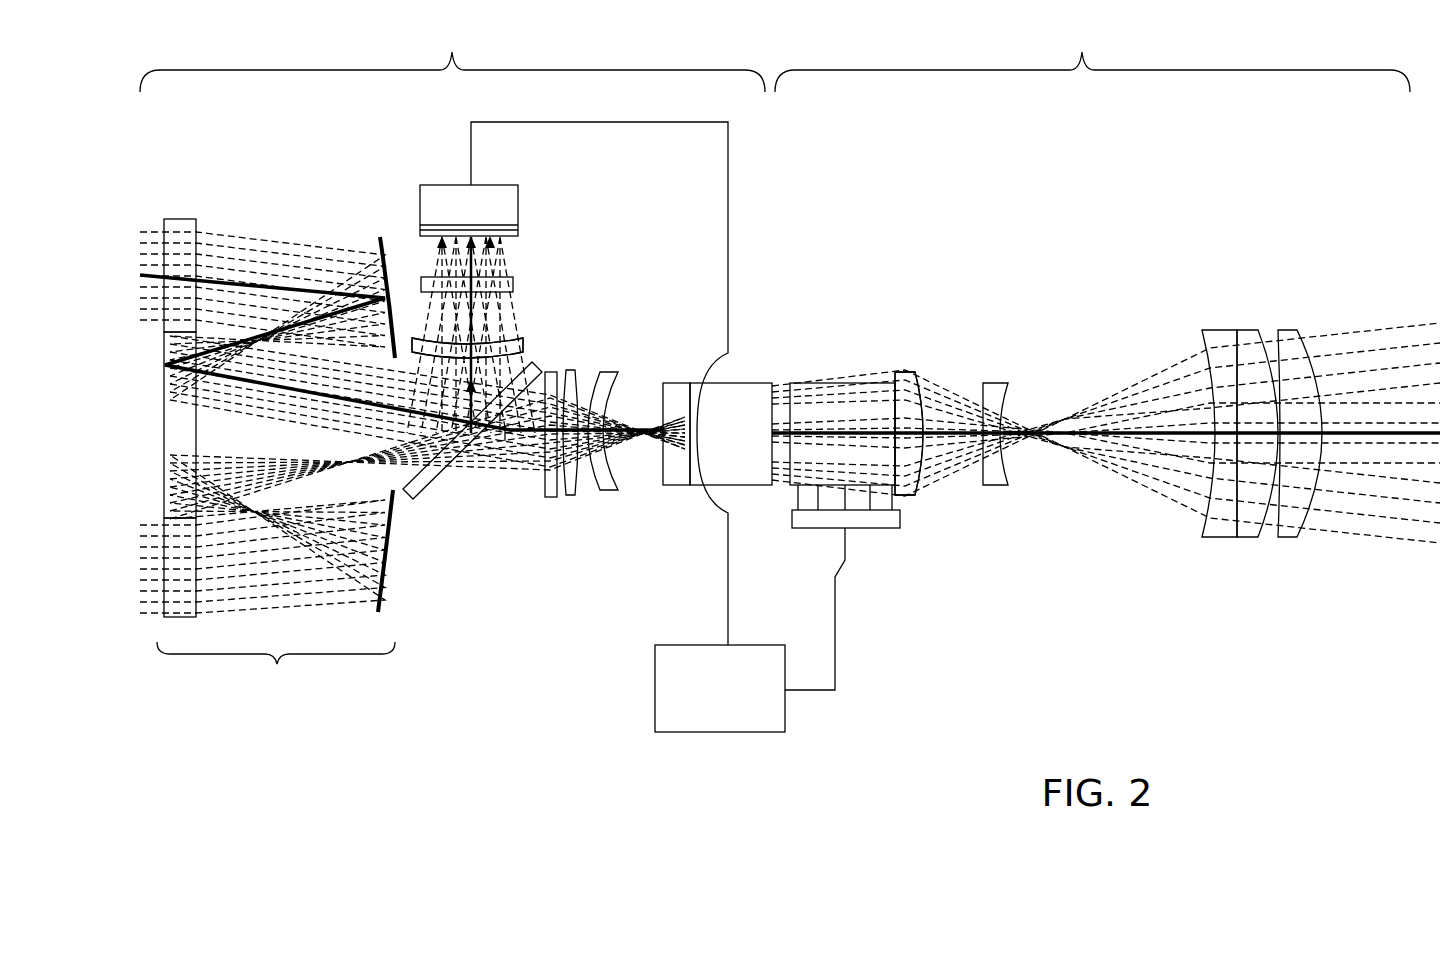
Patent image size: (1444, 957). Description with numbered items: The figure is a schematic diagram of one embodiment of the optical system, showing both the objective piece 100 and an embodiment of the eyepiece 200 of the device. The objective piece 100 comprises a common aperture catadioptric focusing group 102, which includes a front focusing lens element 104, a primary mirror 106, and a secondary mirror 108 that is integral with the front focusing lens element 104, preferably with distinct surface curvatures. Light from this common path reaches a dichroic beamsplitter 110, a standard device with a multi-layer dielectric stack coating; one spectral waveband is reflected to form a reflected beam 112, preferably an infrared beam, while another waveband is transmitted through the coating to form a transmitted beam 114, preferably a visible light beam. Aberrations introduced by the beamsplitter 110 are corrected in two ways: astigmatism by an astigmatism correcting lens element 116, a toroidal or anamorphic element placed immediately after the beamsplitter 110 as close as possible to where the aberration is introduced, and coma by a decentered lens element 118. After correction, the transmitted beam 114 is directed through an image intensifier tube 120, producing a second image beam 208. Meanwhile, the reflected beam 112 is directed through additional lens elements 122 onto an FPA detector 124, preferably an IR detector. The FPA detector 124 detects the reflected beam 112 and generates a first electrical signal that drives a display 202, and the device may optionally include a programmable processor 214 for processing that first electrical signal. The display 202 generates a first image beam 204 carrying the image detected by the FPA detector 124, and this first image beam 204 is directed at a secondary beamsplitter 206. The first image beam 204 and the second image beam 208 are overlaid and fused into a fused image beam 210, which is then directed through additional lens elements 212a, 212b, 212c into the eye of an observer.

The objective piece 100 is at (452, 54).
The common aperture catadioptric focusing group 102 is at (276, 666).
The front focusing lens element 104 is at (185, 219).
The primary mirror 106 is at (383, 237).
The secondary mirror 108 is at (163, 428).
The dichroic beamsplitter 110 is at (410, 497).
The reflected beam 112 is at (522, 357).
The transmitted beam 114 is at (510, 440).
The astigmatism correcting lens element 116 is at (552, 498).
The decentered lens element 118 is at (626, 502).
The image intensifier tube 120 is at (718, 447).
The additional lens elements 122 is at (530, 274).
The FPA detector 124 is at (517, 204).
The eyepiece 200 is at (1092, 54).
The display 202 is at (900, 520).
The first image beam 204 is at (845, 433).
The secondary beamsplitter 206 is at (868, 383).
The second image beam 208 is at (808, 432).
The fused image beam 210 is at (1063, 448).
The additional lens element 212a is at (915, 372).
The additional lens element 212b is at (1005, 385).
The additional lens element 212c is at (1199, 320).
The programmable processor 214 is at (703, 707).